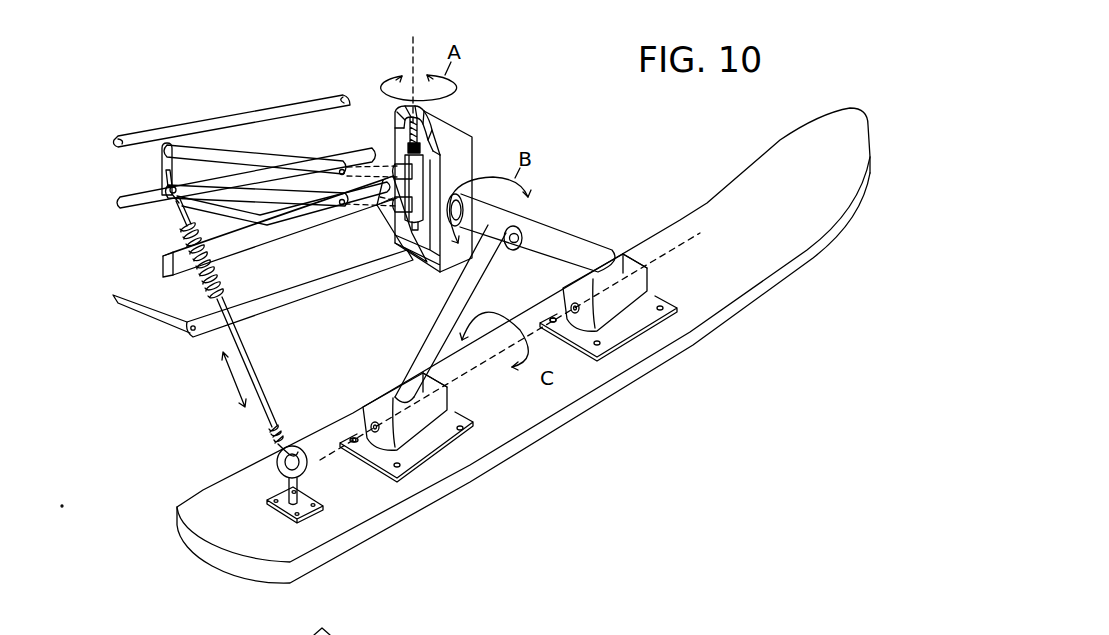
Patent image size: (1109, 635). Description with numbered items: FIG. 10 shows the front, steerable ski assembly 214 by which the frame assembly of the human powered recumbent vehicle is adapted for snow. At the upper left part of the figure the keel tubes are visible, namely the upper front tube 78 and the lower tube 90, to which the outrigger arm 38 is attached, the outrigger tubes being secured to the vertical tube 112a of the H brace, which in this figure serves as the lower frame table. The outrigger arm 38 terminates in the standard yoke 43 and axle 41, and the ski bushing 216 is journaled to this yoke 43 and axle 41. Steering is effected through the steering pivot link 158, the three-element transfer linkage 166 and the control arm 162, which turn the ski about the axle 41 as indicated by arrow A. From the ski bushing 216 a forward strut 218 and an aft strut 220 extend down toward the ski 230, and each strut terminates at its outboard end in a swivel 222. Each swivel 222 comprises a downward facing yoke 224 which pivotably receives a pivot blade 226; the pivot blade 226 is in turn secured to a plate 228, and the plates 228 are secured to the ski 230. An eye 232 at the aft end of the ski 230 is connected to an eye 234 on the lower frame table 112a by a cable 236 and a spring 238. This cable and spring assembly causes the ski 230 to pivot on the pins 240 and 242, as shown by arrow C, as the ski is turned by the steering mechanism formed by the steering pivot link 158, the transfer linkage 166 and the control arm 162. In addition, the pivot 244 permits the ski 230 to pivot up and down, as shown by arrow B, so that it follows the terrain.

The outrigger arm 38 is at (290, 197).
The vertical pin 41 is at (417, 120).
The axle yoke 43 is at (457, 137).
The upper front tube 78 is at (229, 121).
The lower tube 90 is at (355, 145).
The vertical tube of H brace 112a is at (162, 155).
The steering pivot link 158 is at (313, 220).
The control arm 162 is at (397, 248).
The transfer linkage 166 is at (353, 278).
The front steerable ski assembly 214 is at (553, 125).
The ski bushing 216 is at (493, 215).
The forward strut 218 is at (557, 253).
The aft strut 220 is at (440, 317).
The swivel 222 is at (376, 385).
The downward facing yoke 224 is at (447, 388).
The pivot blade 226 is at (430, 410).
The plate 228 is at (420, 450).
The ski 230 is at (373, 507).
The eye 232 is at (270, 462).
The eye 234 is at (177, 203).
The cable 236 is at (257, 367).
The spring 238 is at (222, 275).
The pin 240 is at (377, 430).
The pin 242 is at (553, 319).
The pivot 244 is at (513, 250).